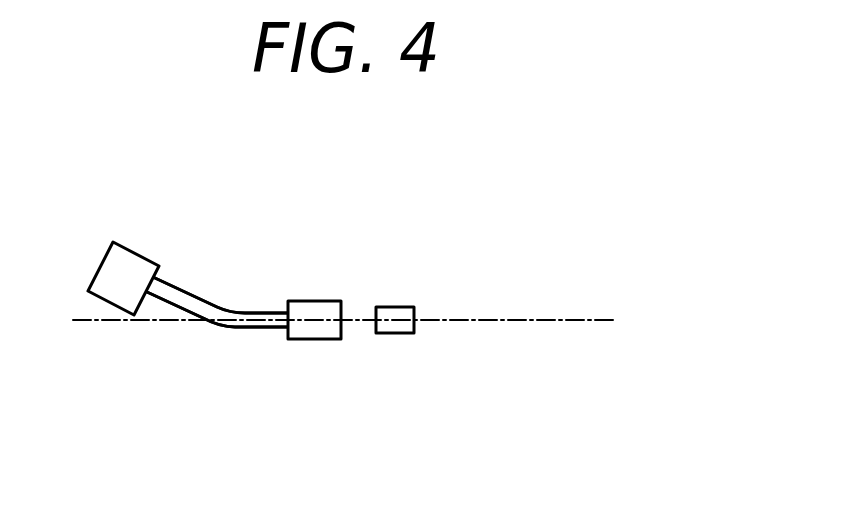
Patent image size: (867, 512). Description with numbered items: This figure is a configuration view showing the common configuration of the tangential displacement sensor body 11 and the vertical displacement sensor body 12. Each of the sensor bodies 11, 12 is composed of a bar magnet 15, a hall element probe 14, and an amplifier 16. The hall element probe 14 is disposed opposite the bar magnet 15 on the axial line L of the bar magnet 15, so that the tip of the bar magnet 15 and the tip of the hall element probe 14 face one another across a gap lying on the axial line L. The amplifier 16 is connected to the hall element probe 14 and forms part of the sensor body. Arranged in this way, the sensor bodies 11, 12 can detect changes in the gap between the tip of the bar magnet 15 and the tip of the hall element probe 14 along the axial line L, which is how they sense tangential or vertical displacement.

The tangential displacement sensor body 11 is at (327, 278).
The vertical displacement sensor body 12 is at (217, 302).
The hall element probe 14 is at (313, 340).
The bar magnet 15 is at (400, 333).
The amplifier 16 is at (110, 307).
The axial line L is at (530, 320).